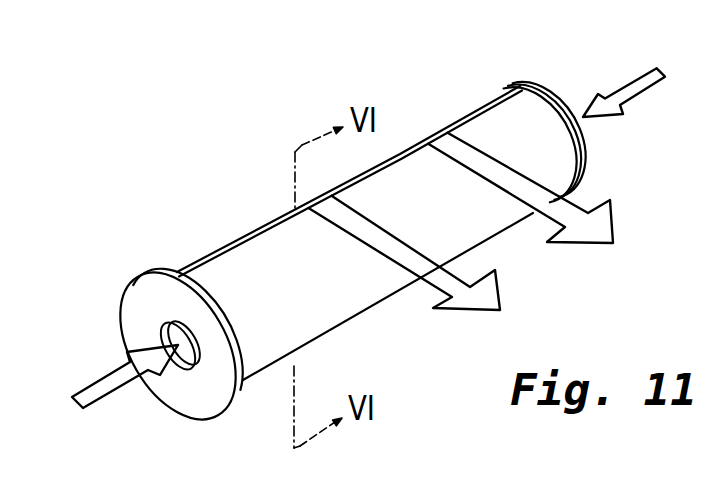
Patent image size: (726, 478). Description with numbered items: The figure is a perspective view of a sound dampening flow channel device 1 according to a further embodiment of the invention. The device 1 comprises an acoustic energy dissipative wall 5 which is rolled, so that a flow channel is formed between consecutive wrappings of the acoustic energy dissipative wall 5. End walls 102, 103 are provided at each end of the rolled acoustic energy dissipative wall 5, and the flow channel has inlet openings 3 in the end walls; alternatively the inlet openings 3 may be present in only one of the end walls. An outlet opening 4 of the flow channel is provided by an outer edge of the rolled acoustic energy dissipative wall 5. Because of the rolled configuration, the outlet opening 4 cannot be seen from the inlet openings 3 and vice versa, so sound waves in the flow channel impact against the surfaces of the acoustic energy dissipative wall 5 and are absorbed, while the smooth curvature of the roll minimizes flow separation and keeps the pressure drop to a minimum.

The sound dampening flow channel device 1 is at (440, 97).
The inlet opening 3 is at (187, 373).
The outlet opening 4 is at (275, 232).
The acoustic energy dissipative wall 5 is at (230, 249).
The end wall 102 is at (133, 313).
The end wall 103 is at (552, 97).